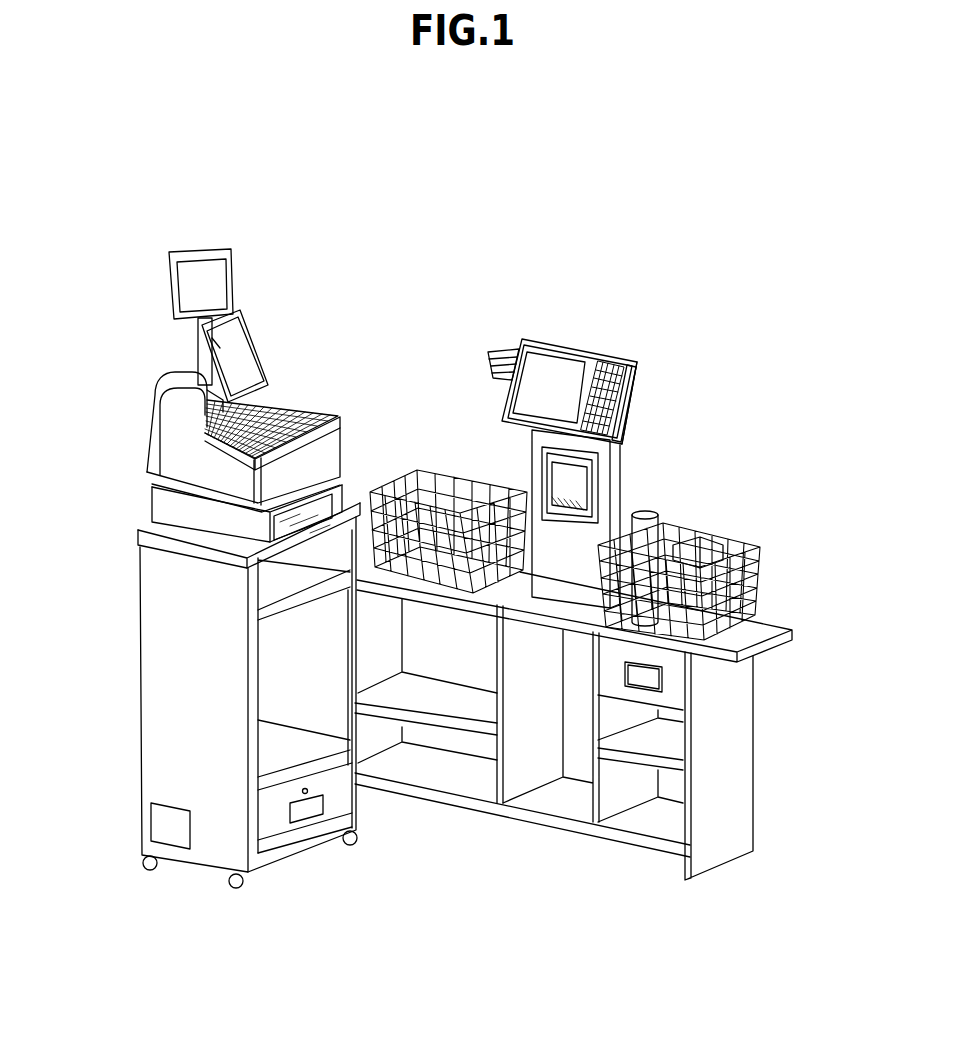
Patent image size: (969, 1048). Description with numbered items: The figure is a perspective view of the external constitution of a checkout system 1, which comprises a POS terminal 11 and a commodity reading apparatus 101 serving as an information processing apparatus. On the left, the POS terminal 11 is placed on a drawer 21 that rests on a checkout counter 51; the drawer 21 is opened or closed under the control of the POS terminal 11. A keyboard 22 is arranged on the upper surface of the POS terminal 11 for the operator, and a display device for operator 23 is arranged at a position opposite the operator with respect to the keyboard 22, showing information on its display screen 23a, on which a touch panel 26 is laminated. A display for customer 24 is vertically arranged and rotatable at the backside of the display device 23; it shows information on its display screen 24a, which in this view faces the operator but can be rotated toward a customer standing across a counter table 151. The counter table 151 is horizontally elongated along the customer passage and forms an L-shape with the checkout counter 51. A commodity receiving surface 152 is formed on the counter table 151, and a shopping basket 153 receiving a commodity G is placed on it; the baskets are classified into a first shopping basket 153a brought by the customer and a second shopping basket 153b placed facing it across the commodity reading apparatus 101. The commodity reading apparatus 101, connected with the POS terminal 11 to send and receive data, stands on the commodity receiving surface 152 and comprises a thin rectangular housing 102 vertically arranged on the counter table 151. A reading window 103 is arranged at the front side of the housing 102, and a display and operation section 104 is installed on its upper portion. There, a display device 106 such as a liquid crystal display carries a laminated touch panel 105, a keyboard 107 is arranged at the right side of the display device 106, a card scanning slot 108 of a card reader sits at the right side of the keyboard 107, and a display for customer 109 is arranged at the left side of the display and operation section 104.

The checkout system 1 is at (102, 281).
The POS terminal 11 is at (128, 413).
The drawer 21 is at (162, 507).
The keyboard 22 is at (317, 407).
The display device for operator 23 is at (243, 316).
The display screen 23a is at (270, 357).
The display for customer 24 is at (202, 251).
The display screen 24a is at (190, 266).
The touch panel 26 is at (205, 350).
The checkout counter 51 is at (162, 688).
The commodity reading apparatus 101 is at (494, 228).
The housing 102 is at (552, 552).
The reading window 103 is at (558, 484).
The display and operation section 104 is at (535, 346).
The touch panel 105 is at (563, 357).
The display device 106 is at (597, 362).
The keyboard 107 is at (624, 366).
The card scanning slot 108 is at (628, 366).
The display for customer 109 is at (493, 347).
The counter table 151 is at (742, 783).
The commodity receiving surface 152 is at (767, 622).
The shopping basket 153 is at (757, 524).
The first shopping basket 153a is at (760, 550).
The second shopping basket 153b is at (407, 470).
The commodity G is at (650, 510).